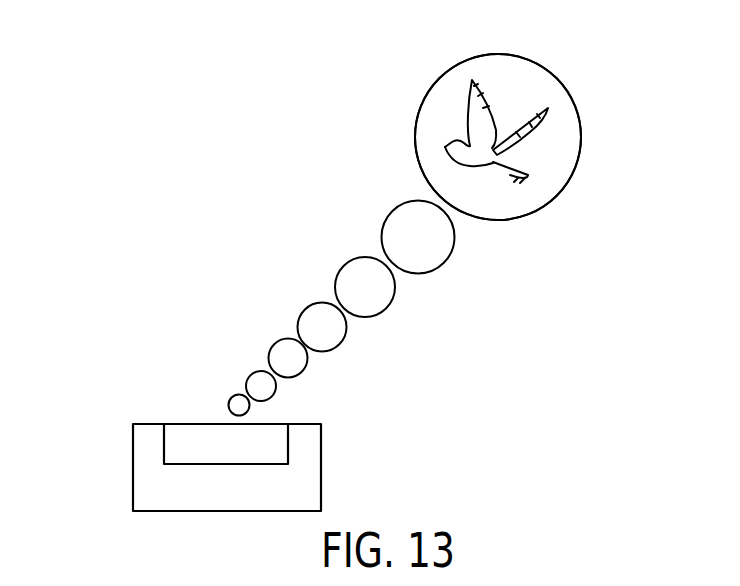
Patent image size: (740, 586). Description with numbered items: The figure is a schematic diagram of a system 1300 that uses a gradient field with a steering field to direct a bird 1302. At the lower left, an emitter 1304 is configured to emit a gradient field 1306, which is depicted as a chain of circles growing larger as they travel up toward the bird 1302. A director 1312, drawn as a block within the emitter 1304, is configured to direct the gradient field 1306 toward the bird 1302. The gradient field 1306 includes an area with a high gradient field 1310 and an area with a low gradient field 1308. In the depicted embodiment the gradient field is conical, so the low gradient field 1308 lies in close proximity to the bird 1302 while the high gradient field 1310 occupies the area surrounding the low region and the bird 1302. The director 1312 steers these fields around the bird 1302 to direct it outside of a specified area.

The system 1300 is at (201, 110).
The bird 1302 is at (517, 120).
The emitter 1304 is at (133, 480).
The gradient field 1306 is at (392, 302).
The low gradient field 1308 is at (563, 152).
The high gradient field 1310 is at (418, 106).
The director 1312 is at (288, 447).